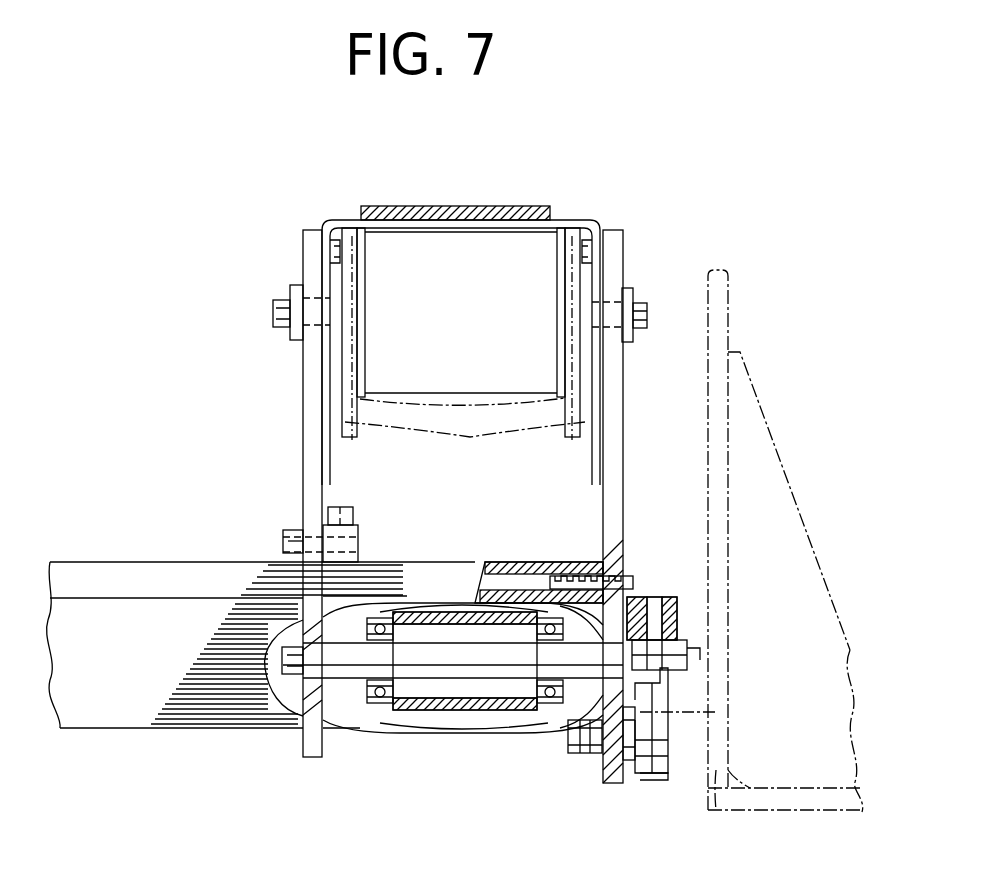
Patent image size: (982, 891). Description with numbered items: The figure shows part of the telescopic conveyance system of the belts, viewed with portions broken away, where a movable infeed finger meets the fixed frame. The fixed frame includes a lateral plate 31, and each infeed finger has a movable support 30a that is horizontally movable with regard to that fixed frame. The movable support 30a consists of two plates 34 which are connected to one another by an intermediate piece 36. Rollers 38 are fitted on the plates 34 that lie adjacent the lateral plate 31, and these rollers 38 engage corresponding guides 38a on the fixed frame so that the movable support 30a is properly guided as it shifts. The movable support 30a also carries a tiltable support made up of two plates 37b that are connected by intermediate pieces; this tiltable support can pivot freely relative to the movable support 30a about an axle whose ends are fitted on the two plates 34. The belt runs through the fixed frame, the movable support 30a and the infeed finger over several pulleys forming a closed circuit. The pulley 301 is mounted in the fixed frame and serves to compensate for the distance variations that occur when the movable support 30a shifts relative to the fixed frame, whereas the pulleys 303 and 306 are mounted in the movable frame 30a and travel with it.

The movable support 30a is at (305, 413).
The lateral plate 31 is at (720, 795).
The plate 34 is at (310, 250).
The intermediate piece 36 is at (113, 610).
The plate of tiltable support 37b is at (473, 438).
The roller 38 is at (645, 770).
The guide 38a is at (660, 705).
The pulley 301 is at (405, 207).
The pulley 303 is at (427, 707).
The pulley 306 is at (488, 258).